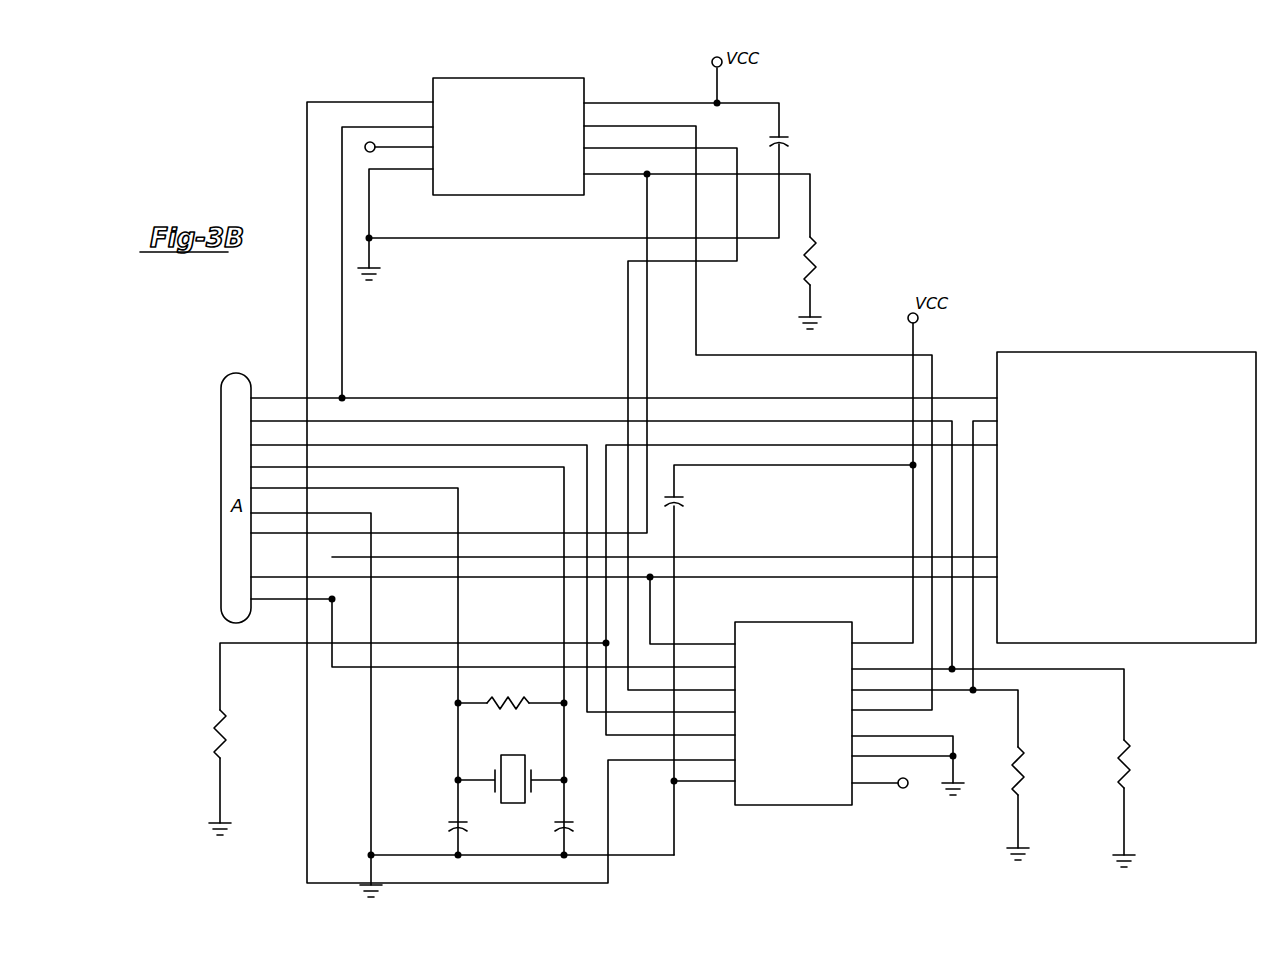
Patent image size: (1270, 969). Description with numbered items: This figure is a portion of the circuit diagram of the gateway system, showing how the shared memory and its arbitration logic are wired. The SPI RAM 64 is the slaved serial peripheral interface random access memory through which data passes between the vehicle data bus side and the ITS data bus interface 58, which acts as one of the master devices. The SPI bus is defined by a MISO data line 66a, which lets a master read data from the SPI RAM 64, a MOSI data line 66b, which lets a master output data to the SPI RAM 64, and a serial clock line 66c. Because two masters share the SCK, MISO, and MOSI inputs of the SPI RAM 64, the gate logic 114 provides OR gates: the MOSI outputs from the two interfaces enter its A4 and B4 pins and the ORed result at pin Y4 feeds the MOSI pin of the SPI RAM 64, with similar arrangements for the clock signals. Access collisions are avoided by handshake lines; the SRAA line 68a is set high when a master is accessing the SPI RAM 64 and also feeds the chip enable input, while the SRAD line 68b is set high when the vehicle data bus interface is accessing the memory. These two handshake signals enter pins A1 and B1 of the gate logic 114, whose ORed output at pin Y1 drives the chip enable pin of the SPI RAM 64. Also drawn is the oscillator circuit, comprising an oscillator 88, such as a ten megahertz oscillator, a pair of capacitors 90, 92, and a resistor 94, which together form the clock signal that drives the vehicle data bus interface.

The ITS data bus interface 58 is at (1107, 357).
The SPI RAM 64 is at (540, 78).
The gate logic 114 is at (778, 622).
The MISO data line 66a is at (342, 337).
The MOSI data line 66b is at (696, 298).
The serial clock line 66c is at (307, 322).
The handshake line SRAA 68a is at (755, 577).
The handshake line SRAD 68b is at (827, 557).
The oscillator 88 is at (517, 755).
The capacitor 90 is at (452, 820).
The capacitor 92 is at (557, 820).
The resistor 94 is at (505, 694).